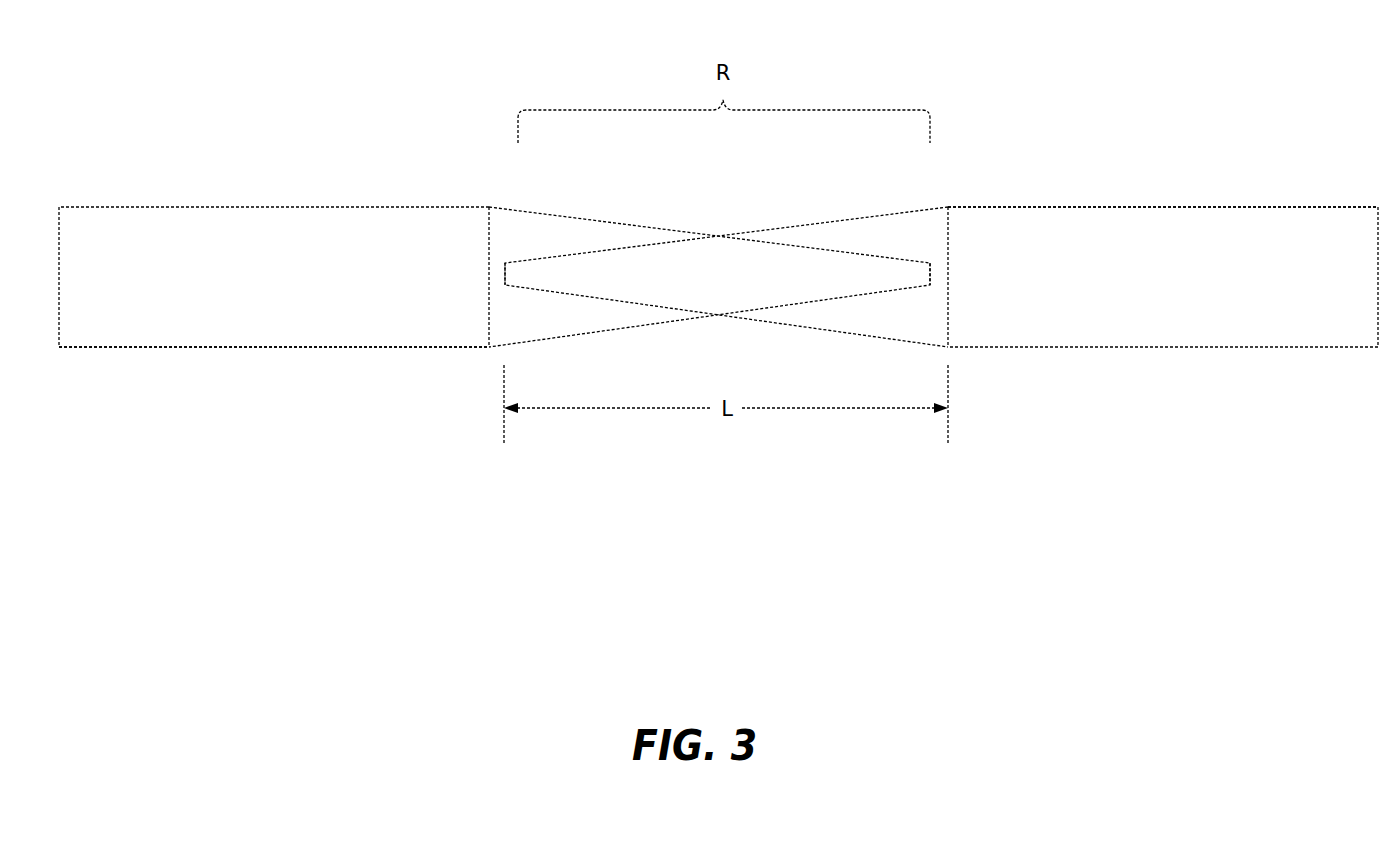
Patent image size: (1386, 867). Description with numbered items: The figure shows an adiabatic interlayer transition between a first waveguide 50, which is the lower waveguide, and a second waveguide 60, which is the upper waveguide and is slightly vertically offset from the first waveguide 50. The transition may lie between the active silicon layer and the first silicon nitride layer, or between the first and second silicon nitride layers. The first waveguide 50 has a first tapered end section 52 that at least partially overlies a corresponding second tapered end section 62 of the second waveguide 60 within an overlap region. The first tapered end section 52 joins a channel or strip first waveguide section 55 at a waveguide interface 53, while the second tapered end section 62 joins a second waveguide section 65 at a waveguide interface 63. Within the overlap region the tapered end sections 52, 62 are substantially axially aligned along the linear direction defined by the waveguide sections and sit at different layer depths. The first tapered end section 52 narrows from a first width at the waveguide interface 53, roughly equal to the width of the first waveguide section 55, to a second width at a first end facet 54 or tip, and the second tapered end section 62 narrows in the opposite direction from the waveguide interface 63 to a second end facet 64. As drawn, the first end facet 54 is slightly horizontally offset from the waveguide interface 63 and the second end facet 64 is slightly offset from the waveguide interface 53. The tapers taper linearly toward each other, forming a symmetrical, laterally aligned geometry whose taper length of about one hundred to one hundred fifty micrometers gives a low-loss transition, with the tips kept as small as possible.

The first waveguide 50 is at (312, 172).
The second waveguide 60 is at (1115, 157).
The first tapered end section 52 is at (597, 222).
The second tapered end section 62 is at (802, 222).
The waveguide interface 53 is at (487, 238).
The waveguide interface 63 is at (950, 320).
The first end facet 54 is at (935, 273).
The second end facet 64 is at (502, 288).
The first waveguide section 55 is at (262, 347).
The second waveguide section 65 is at (1230, 207).